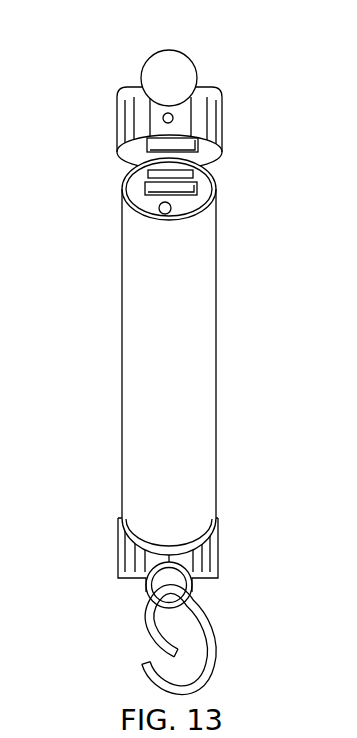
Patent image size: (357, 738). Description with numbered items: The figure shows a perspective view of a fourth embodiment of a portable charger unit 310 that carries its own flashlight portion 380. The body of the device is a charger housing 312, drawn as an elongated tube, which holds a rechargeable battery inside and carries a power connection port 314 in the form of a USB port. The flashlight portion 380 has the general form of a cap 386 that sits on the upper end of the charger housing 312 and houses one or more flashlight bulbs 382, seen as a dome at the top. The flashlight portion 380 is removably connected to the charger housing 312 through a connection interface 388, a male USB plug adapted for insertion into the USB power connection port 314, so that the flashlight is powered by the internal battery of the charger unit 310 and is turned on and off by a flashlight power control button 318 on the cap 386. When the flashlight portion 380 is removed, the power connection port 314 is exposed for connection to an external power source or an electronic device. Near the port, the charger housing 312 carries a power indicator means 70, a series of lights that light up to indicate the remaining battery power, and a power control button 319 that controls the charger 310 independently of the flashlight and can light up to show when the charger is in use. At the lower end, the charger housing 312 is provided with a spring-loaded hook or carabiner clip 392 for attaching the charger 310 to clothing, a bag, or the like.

The portable charger unit 310 is at (62, 321).
The charger housing 312 is at (190, 469).
The power connection port 314 is at (193, 189).
The flashlight power control button 318 is at (163, 118).
The power control button 319 is at (159, 208).
The power indicator means 70 is at (148, 174).
The flashlight portion 380 is at (257, 121).
The flashlight bulb 382 is at (158, 70).
The cap 386 is at (125, 113).
The connection interface 388 is at (212, 156).
The spring-loaded hook or carabiner clip 392 is at (211, 649).